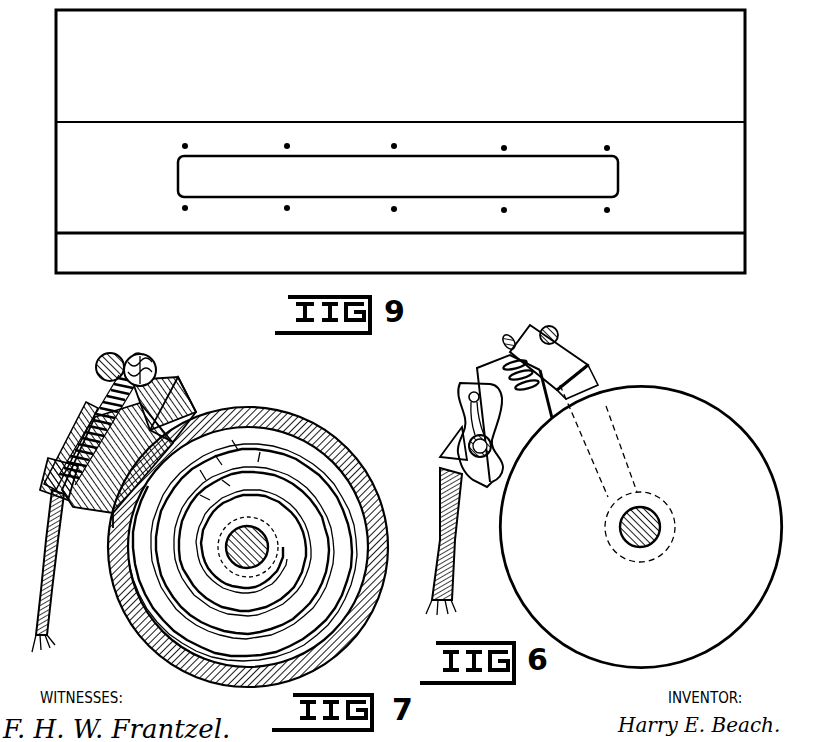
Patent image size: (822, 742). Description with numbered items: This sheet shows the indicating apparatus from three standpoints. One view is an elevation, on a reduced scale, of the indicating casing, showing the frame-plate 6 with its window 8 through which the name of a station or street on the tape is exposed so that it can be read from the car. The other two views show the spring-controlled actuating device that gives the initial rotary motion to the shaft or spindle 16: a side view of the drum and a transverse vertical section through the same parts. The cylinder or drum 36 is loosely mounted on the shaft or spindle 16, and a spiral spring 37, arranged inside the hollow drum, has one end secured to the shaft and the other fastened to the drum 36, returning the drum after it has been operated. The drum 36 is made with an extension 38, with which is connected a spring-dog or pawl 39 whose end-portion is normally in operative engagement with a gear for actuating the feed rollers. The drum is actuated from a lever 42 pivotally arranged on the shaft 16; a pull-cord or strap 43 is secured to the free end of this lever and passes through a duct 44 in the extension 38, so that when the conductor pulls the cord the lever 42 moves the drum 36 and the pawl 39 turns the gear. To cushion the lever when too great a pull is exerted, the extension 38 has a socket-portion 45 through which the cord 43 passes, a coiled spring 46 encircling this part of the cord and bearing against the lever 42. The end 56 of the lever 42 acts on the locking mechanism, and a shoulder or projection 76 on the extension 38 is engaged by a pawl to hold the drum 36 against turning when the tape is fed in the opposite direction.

In FIG. 9, the frame-plate 6 is at (400, 141).
In FIG. 9, the window 8 is at (520, 166).
In FIG. 7, the shaft or spindle 16 is at (241, 553).
In FIG. 6, the shaft or spindle 16 is at (660, 526).
In FIG. 7, the cylinder or drum 36 is at (298, 420).
In FIG. 6, the cylinder or drum 36 is at (536, 606).
In FIG. 7, the spiral spring 37 is at (330, 572).
In FIG. 7, the extension 38 is at (60, 460).
In FIG. 6, the extension 38 is at (514, 418).
In FIG. 6, the spring-dog or pawl 39 is at (458, 441).
In FIG. 7, the lever 42 is at (178, 393).
In FIG. 6, the lever 42 is at (578, 361).
In FIG. 7, the pull-cord or strap 43 is at (48, 523).
In FIG. 6, the pull-cord or strap 43 is at (452, 572).
In FIG. 7, the duct 44 is at (54, 473).
In FIG. 7, the socket-portion 45 is at (110, 400).
In FIG. 6, the socket-portion 45 is at (508, 364).
In FIG. 7, the coiled spring 46 is at (86, 430).
In FIG. 7, the end of lever 56 is at (107, 366).
In FIG. 6, the end of lever 56 is at (522, 331).
In FIG. 6, the shoulder or projection 76 is at (469, 397).